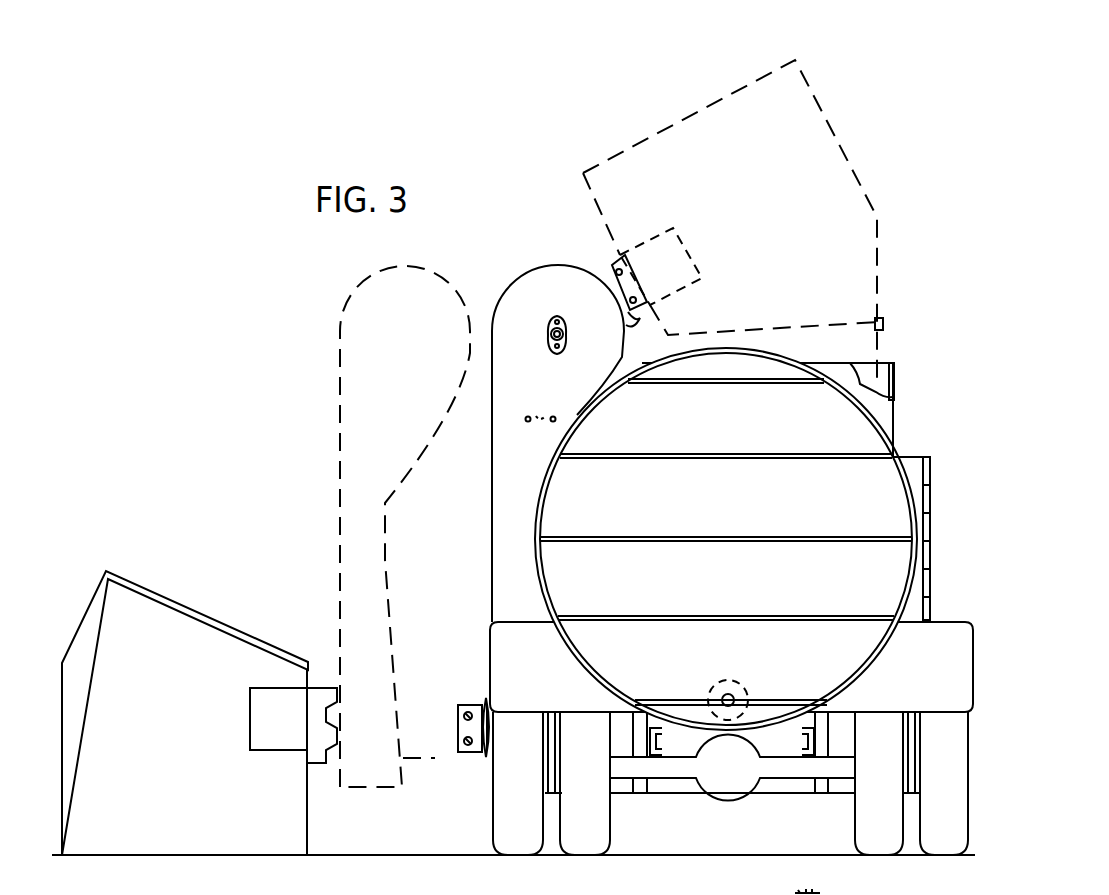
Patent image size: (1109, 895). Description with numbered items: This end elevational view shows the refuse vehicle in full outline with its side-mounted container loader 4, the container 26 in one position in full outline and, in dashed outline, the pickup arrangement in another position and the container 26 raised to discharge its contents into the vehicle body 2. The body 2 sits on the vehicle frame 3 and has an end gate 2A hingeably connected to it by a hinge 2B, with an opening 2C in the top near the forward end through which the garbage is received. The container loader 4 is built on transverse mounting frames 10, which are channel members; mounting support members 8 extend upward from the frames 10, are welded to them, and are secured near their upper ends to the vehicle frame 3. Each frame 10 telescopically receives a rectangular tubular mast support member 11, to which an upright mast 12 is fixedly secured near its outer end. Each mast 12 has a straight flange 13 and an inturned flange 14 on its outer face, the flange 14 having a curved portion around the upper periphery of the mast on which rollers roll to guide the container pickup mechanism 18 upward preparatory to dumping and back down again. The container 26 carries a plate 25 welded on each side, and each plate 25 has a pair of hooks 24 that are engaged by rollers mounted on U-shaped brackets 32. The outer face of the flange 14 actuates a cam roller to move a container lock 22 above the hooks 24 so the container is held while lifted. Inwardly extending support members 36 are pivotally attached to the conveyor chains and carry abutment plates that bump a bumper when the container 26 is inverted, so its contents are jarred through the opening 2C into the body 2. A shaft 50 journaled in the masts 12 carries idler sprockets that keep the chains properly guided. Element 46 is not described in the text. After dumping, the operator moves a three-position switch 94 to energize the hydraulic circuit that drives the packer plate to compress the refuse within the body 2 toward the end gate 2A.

The body 2 is at (728, 348).
The end gate 2A is at (887, 473).
The hinge 2B is at (915, 612).
The opening 2C is at (868, 372).
The frame 3 is at (825, 702).
The container loader 4 is at (515, 270).
The mounting support members 8 is at (632, 722).
The transverse mounting frame 10 is at (687, 792).
The tubular mast support member 11 is at (445, 790).
The mast 12 is at (492, 515).
The straight flange 13 is at (778, 893).
The inturned flange 14 is at (492, 460).
The container pickup mechanism 18 is at (455, 712).
The container lock 22 is at (485, 700).
The hooks 24 is at (325, 762).
The plate 25 is at (250, 733).
The container 26 is at (228, 623).
The U-shaped brackets 32 is at (458, 733).
The inwardly extending support members 36 is at (486, 695).
The pivot bracket 46 is at (550, 336).
The shaft 50 is at (533, 410).
The three-position switch 94 is at (745, 686).